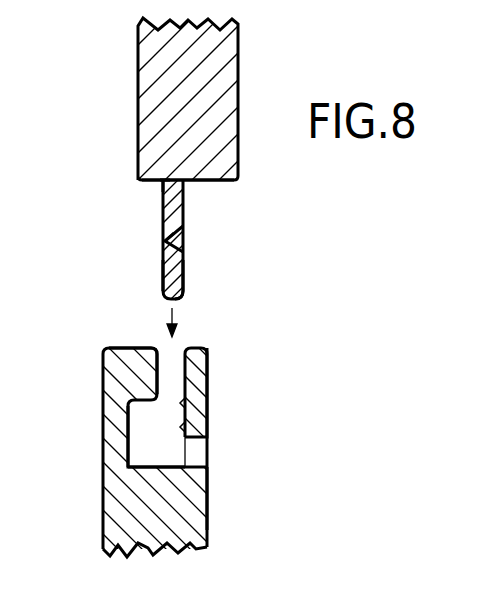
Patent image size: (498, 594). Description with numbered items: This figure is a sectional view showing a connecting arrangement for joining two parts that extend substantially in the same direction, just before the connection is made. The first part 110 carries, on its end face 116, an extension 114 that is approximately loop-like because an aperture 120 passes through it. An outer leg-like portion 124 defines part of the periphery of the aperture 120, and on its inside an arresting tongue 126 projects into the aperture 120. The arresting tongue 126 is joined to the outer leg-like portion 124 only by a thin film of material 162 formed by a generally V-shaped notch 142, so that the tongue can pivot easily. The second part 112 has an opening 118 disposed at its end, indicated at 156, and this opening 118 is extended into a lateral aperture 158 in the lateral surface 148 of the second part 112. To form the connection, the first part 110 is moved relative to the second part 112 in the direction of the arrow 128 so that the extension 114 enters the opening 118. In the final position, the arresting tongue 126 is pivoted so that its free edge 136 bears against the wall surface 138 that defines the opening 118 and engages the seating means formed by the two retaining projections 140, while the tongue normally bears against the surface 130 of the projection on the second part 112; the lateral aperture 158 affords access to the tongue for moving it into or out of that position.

The first part 110 is at (221, 59).
The end face 116 is at (221, 181).
The free edge 136 is at (170, 182).
The aperture 120 is at (167, 185).
The arresting tongue 126 is at (176, 208).
The V-shaped notch 142 is at (183, 246).
The thin film of material 162 is at (168, 243).
The outer leg-like portion 124 is at (167, 268).
The extension 114 is at (186, 272).
The arrow 128 is at (168, 318).
The second part 112 is at (207, 532).
The opening 118 is at (173, 371).
The lateral aperture 158 is at (198, 453).
The retaining projections 140 is at (181, 427).
The end of the second part 156 is at (132, 348).
The surface of the projection 130 is at (125, 414).
The wall surface 138 is at (180, 410).
The lateral surface 148 is at (207, 502).